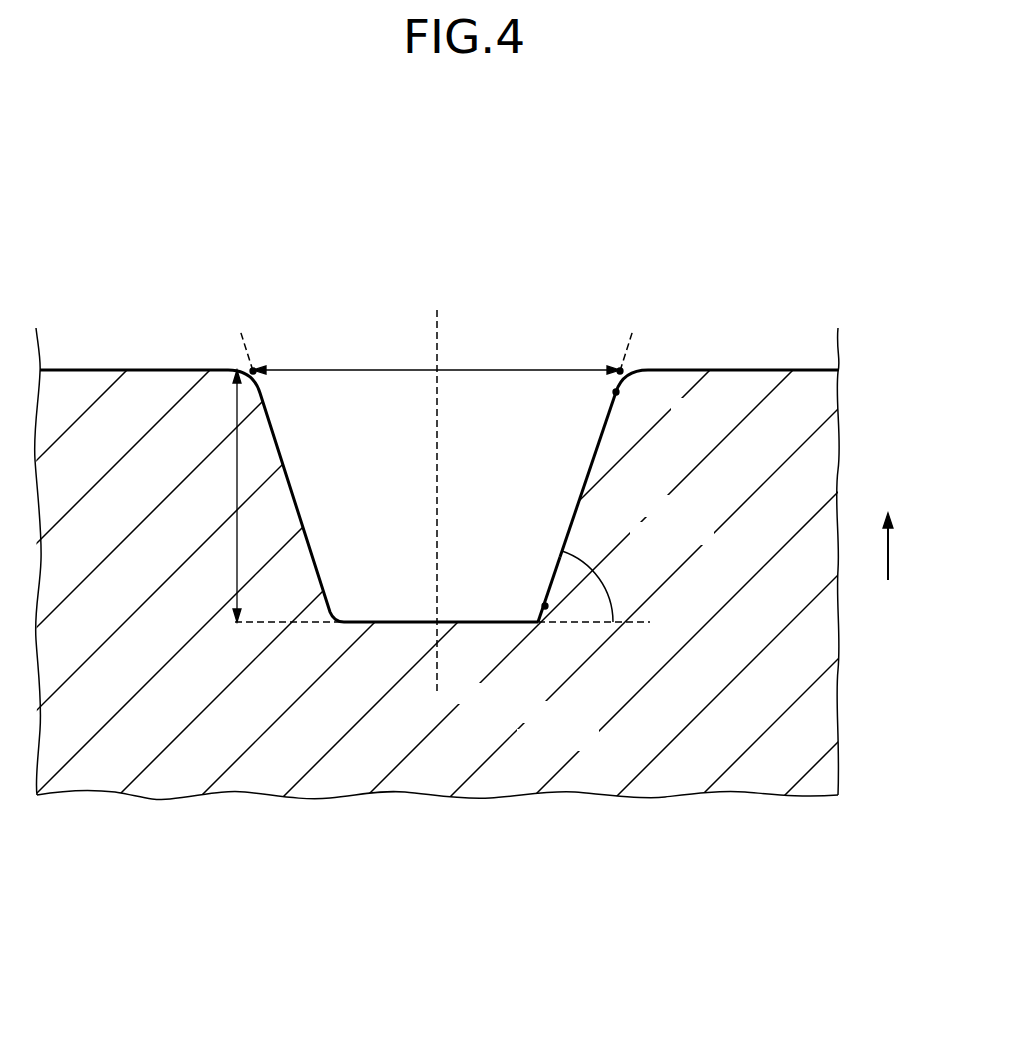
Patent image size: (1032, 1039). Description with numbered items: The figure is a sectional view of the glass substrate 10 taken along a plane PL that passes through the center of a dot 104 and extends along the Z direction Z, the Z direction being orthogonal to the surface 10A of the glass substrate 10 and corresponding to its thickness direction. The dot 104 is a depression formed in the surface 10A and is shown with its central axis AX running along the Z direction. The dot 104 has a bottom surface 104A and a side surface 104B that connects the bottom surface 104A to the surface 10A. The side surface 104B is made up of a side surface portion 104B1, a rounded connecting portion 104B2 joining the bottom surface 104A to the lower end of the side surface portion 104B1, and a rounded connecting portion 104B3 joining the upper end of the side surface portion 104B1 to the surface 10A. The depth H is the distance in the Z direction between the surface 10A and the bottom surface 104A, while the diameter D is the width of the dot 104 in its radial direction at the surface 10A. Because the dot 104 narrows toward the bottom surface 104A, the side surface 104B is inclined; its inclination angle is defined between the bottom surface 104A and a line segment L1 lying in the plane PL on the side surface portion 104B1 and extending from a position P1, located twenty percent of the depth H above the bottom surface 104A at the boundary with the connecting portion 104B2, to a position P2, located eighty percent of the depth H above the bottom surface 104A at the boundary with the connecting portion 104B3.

The glass substrate 10 is at (516, 493).
The surface 10A is at (770, 370).
The dot 104 is at (491, 460).
The bottom surface 104A is at (480, 628).
The side surface 104B is at (638, 507).
The side surface portion 104B1 is at (580, 503).
The connecting portion 104B2 is at (540, 620).
The connecting portion 104B3 is at (629, 370).
The plane PL is at (695, 778).
The central axis AX is at (437, 310).
The diameter D is at (513, 370).
The depth H is at (280, 496).
The position P1 is at (545, 606).
The position P2 is at (616, 392).
The line segment L1 is at (595, 460).
The Z direction Z is at (897, 546).